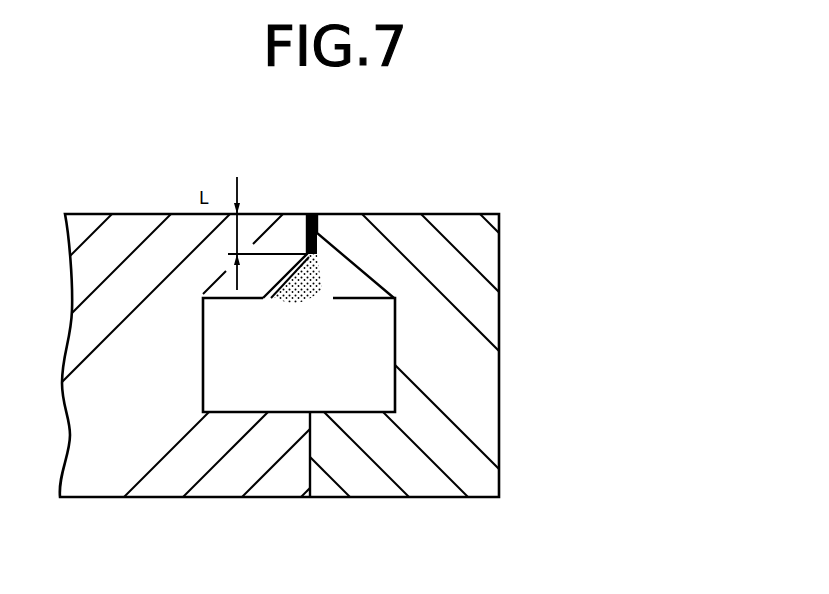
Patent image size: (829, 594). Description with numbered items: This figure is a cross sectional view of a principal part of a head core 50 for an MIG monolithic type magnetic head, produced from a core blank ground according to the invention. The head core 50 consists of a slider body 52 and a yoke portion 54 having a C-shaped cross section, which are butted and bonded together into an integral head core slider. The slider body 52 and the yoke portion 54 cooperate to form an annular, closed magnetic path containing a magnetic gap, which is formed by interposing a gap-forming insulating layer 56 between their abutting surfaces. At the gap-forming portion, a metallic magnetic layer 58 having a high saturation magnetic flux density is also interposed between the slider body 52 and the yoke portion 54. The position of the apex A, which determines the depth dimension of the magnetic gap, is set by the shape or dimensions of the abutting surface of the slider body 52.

The head core 50 is at (556, 250).
The slider body 52 is at (88, 185).
The yoke portion 54 is at (530, 380).
The gap-forming insulating layer 56 is at (320, 235).
The metallic magnetic layer 58 is at (298, 250).
The apex A is at (330, 260).